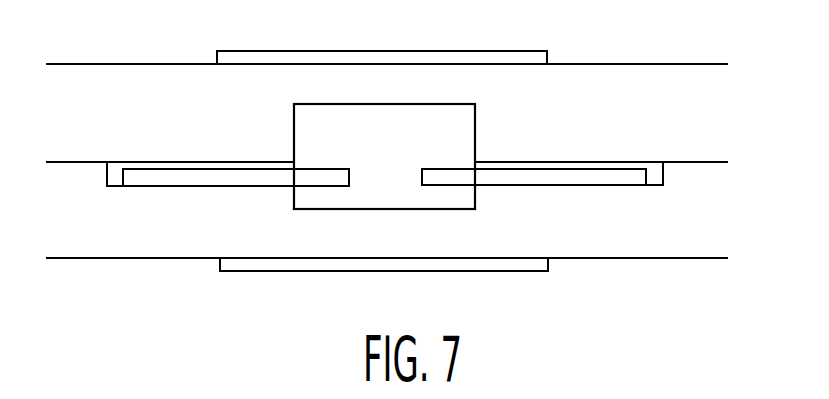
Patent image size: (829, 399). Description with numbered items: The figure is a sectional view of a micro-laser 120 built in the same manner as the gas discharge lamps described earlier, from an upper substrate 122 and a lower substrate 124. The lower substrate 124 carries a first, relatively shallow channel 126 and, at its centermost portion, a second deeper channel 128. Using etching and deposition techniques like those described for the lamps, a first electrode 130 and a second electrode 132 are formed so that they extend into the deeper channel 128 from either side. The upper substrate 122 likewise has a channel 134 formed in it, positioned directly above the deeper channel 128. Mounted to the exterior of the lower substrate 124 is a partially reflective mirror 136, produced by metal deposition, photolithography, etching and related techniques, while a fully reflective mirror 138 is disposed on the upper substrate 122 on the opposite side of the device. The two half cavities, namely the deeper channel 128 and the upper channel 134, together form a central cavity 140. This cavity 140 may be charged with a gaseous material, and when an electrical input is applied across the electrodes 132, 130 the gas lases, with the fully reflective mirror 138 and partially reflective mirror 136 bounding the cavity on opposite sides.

The micro-laser 120 is at (697, 51).
The upper substrate 122 is at (578, 70).
The lower substrate 124 is at (602, 245).
The first channel 126 is at (665, 172).
The second channel 128 is at (458, 210).
The first electrode 130 is at (313, 168).
The second electrode 132 is at (455, 168).
The channel 134 is at (412, 103).
The partially reflective mirror 136 is at (503, 271).
The fully reflective mirror 138 is at (347, 49).
The central cavity 140 is at (477, 132).